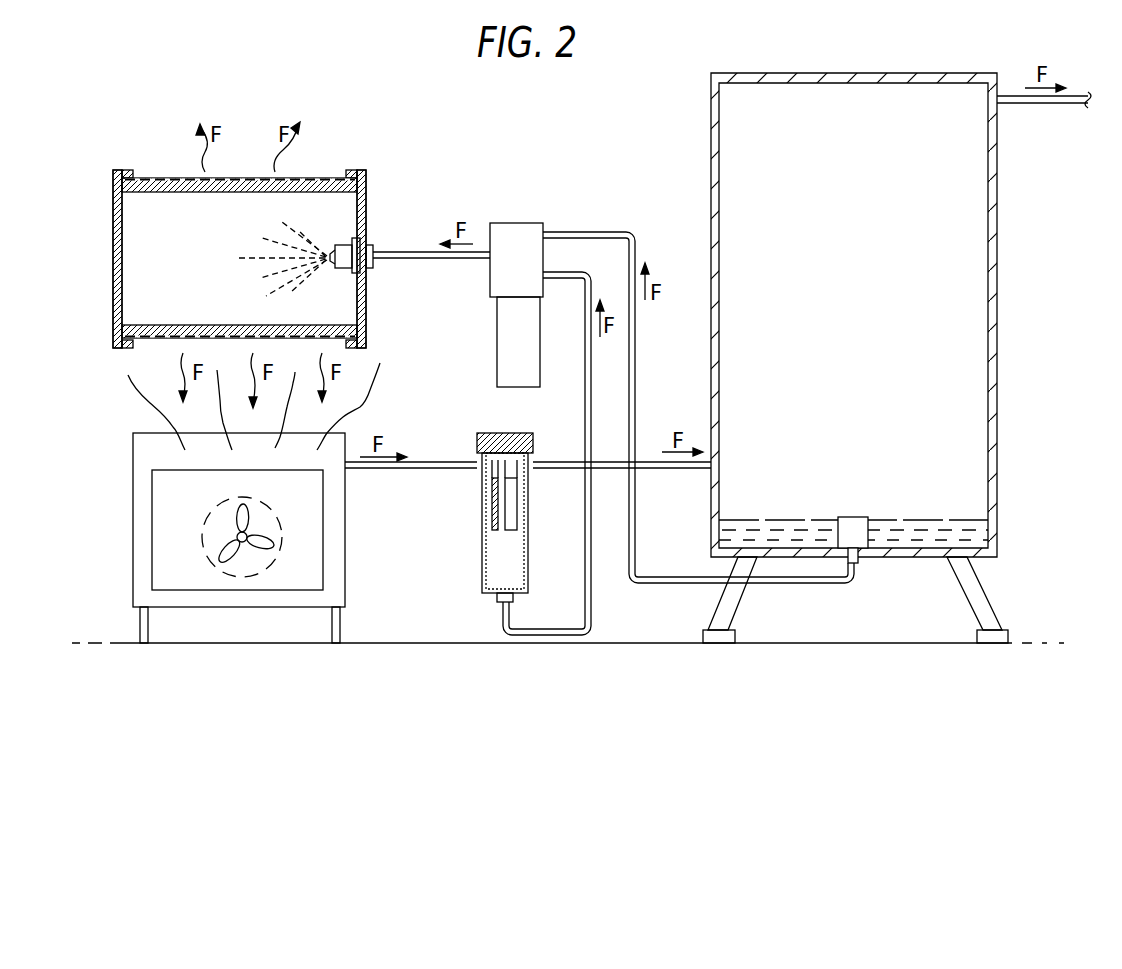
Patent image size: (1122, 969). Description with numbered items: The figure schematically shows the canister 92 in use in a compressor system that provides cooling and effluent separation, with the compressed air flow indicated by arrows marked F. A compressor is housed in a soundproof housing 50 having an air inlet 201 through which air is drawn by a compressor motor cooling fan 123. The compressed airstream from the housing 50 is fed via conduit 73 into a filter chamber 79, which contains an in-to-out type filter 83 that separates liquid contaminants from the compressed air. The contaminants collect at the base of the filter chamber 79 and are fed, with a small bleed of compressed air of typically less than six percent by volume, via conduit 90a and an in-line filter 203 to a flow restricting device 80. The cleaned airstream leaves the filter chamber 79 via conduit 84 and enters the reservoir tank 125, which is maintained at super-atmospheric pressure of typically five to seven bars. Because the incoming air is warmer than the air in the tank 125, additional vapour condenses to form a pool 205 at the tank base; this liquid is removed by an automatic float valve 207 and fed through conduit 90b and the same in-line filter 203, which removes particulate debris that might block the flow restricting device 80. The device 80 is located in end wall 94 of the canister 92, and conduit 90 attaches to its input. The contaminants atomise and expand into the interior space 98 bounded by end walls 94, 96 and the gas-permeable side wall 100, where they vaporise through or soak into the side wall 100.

The soundproof housing 50 is at (210, 538).
The conduit 73 is at (407, 472).
The filter chamber 79 is at (502, 499).
The flow restricting device 80 is at (332, 266).
The in-to-out type filter 83 is at (512, 512).
The conduit 84 is at (555, 461).
The conduit 90 is at (428, 260).
The conduit 90a is at (592, 610).
The conduit 90b is at (637, 360).
The canister 92 is at (238, 230).
The end wall 94 is at (367, 197).
The end wall 96 is at (113, 205).
The interior space 98 is at (196, 280).
The side wall 100 is at (172, 182).
The compressor motor cooling fan 123 is at (263, 514).
The reservoir tank 125 is at (897, 358).
The air inlet 201 is at (170, 508).
The in-line filter 203 is at (520, 223).
The pool 205 is at (967, 537).
The automatic float valve 207 is at (850, 524).